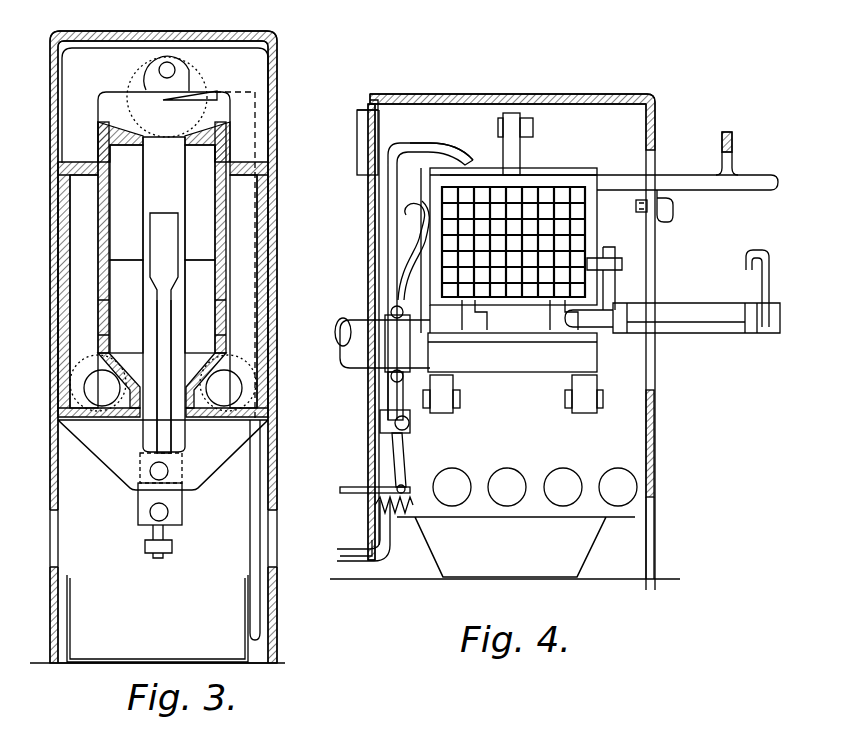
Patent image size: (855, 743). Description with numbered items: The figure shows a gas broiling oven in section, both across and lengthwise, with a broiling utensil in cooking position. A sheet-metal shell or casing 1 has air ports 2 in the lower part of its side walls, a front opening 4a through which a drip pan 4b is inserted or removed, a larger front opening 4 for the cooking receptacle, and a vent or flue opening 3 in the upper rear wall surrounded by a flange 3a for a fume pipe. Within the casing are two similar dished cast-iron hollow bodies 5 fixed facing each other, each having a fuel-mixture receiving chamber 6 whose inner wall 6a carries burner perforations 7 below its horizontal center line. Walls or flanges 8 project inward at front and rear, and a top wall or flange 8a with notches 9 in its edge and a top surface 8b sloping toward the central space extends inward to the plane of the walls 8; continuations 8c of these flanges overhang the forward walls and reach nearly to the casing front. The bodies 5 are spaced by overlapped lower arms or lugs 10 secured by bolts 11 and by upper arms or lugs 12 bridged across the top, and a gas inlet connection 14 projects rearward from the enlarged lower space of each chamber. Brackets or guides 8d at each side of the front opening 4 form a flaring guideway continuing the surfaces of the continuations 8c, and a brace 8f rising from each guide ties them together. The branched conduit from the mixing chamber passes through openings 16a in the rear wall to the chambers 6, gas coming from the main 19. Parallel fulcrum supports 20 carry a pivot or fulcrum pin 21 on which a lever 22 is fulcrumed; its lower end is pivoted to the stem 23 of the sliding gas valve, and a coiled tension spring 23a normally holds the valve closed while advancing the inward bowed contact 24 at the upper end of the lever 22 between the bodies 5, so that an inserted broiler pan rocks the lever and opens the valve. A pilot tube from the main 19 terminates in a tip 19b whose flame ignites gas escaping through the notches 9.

In FIG. 3, the shell or casing 1 is at (50, 449).
In FIG. 4, the shell or casing 1 is at (368, 230).
In FIG. 3, the air ports 2 is at (53, 538).
In FIG. 4, the air ports 2 is at (458, 482).
In FIG. 4, the vent or flue opening 3 is at (366, 131).
In FIG. 4, the flange 3a is at (365, 104).
In FIG. 4, the opening 4 is at (653, 249).
In FIG. 4, the opening 4a is at (655, 510).
In FIG. 3, the drip pan 4b is at (157, 618).
In FIG. 4, the drip pan 4b is at (516, 547).
In FIG. 3, the hollow bodies 5 is at (59, 206).
In FIG. 3, the fuel-mixture receiving chamber 6 is at (163, 291).
In FIG. 3, the inner wall 6a is at (100, 228).
In FIG. 3, the perforations 7 is at (108, 300).
In FIG. 3, the walls or flanges 8 is at (193, 181).
In FIG. 4, the walls or flanges 8 is at (768, 191).
In FIG. 3, the top wall or flange 8a is at (218, 147).
In FIG. 3, the top surface 8b is at (122, 140).
In FIG. 4, the continuations 8c is at (620, 182).
In FIG. 4, the brackets or guides 8d is at (708, 190).
In FIG. 4, the brace 8f is at (733, 160).
In FIG. 3, the notches 9 is at (136, 142).
In FIG. 3, the arms or lugs 10 is at (163, 530).
In FIG. 4, the arms or lugs 10 is at (448, 392).
In FIG. 3, the bolts 11 is at (168, 471).
In FIG. 4, the bolts 11 is at (456, 408).
In FIG. 3, the arms or lugs 12 is at (165, 105).
In FIG. 4, the arms or lugs 12 is at (518, 156).
In FIG. 3, the gas inlet connection 14 is at (226, 380).
In FIG. 4, the gas inlet connection 14 is at (420, 350).
In FIG. 4, the openings 16a is at (372, 318).
In FIG. 4, the main 19 is at (388, 190).
In FIG. 4, the tip 19b is at (441, 136).
In FIG. 3, the fulcrum supports 20 is at (176, 498).
In FIG. 4, the fulcrum supports 20 is at (410, 424).
In FIG. 4, the pivot or fulcrum pin 21 is at (406, 432).
In FIG. 3, the lever 22 is at (166, 292).
In FIG. 4, the lever 22 is at (402, 458).
In FIG. 3, the stem 23 is at (166, 560).
In FIG. 4, the stem 23 is at (356, 488).
In FIG. 4, the coiled tension spring 23a is at (374, 506).
In FIG. 3, the contact 24 is at (162, 242).
In FIG. 4, the contact 24 is at (412, 208).